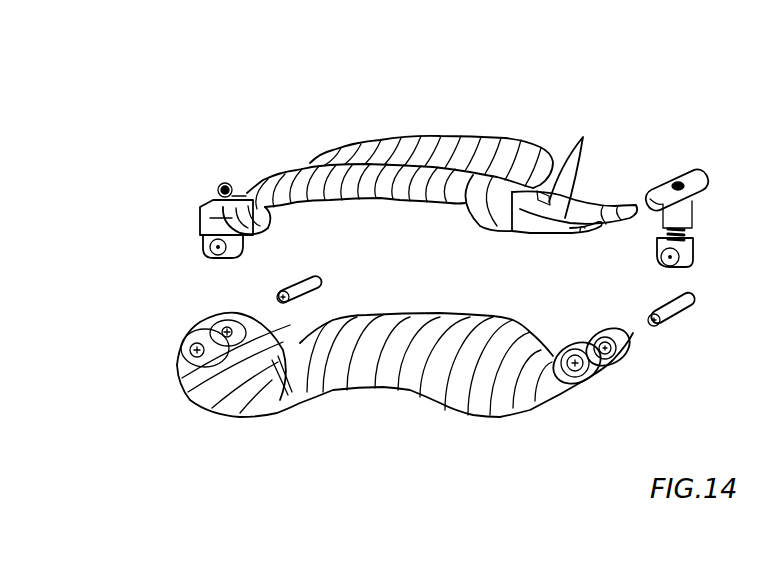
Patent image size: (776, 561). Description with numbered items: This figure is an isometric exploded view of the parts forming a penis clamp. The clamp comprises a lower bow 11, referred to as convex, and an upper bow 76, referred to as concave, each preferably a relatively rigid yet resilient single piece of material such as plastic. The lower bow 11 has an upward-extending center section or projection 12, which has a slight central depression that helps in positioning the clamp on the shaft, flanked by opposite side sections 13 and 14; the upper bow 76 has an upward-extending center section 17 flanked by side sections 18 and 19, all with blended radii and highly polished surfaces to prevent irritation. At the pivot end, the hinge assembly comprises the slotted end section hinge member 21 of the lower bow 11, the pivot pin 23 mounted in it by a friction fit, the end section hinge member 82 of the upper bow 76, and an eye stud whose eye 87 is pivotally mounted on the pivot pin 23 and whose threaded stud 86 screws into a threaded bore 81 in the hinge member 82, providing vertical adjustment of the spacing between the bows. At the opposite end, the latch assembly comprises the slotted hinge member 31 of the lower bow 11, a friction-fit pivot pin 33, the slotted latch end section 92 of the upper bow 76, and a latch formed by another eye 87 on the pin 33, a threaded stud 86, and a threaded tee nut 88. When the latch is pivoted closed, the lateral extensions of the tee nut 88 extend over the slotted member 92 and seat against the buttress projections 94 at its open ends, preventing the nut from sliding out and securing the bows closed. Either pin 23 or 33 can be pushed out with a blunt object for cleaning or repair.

The lower bow 11 is at (393, 394).
The center section 12 is at (360, 375).
The side section 13 is at (260, 405).
The side section 14 is at (510, 407).
The center section 17 is at (367, 198).
The side section 18 is at (278, 213).
The side section 19 is at (487, 213).
The slotted end section hinge member 21 is at (187, 365).
The pivot pin 23 is at (277, 297).
The slotted end section hinge member 31 is at (580, 383).
The pivot pin 33 is at (682, 313).
The upper bow 76 is at (450, 136).
The threaded bore 81 is at (243, 197).
The end section hinge member 82 is at (210, 220).
The threaded stud 86 is at (220, 185).
The eye 87 is at (205, 247).
The tee nut 88 is at (700, 178).
The slotted latch end section 92 is at (584, 137).
The projections 94 is at (625, 200).